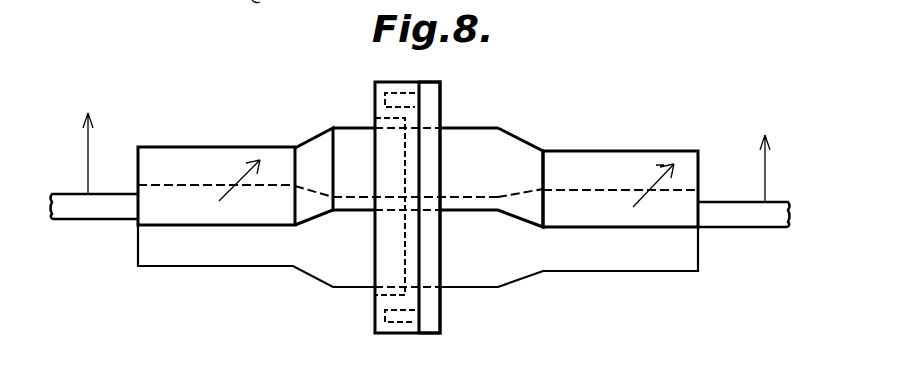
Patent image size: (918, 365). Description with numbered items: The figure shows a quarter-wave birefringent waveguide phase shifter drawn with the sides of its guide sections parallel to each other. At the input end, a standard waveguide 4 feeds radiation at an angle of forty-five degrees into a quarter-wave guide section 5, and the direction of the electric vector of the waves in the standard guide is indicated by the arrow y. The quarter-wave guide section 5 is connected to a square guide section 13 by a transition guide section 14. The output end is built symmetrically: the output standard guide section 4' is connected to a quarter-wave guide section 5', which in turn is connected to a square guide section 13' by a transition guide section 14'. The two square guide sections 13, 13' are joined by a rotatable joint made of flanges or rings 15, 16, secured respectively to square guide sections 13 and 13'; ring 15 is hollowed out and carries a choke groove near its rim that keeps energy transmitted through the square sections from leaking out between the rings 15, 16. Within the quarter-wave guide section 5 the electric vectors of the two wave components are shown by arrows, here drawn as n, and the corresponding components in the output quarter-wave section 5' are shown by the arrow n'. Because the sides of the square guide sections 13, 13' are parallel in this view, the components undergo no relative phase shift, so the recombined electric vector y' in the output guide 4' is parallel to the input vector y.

The standard waveguide 4 is at (87, 225).
The output standard guide section 4' is at (747, 200).
The quarter-wave guide section 5 is at (206, 196).
The quarter-wave guide section 5' is at (620, 203).
The square guide section 13 is at (256, 272).
The square guide section 13' is at (569, 273).
The transition guide section 14 is at (309, 163).
The transition guide section 14' is at (520, 164).
The flange or ring 15 is at (375, 88).
The flange or ring 16 is at (432, 97).
The electric vector arrow y is at (86, 138).
The electric vector arrow y' is at (762, 153).
The rotation arrow n is at (247, 176).
The rotation arrow n' is at (653, 181).